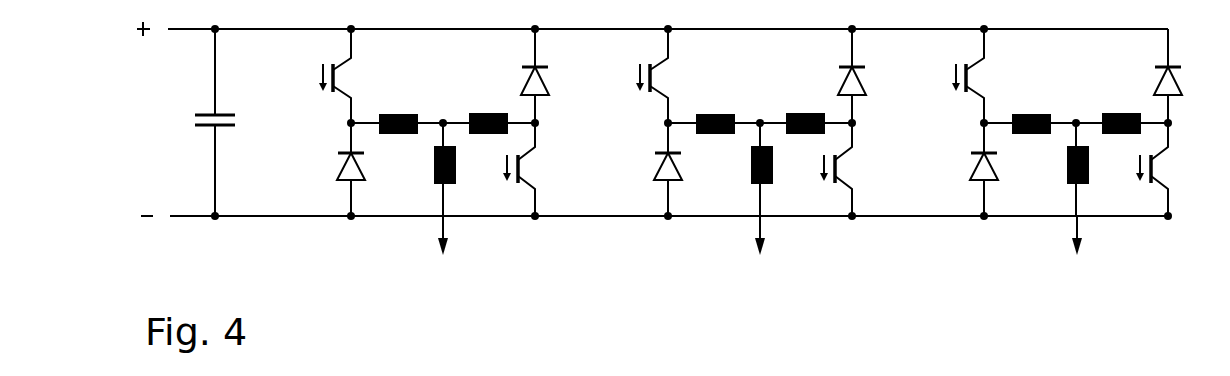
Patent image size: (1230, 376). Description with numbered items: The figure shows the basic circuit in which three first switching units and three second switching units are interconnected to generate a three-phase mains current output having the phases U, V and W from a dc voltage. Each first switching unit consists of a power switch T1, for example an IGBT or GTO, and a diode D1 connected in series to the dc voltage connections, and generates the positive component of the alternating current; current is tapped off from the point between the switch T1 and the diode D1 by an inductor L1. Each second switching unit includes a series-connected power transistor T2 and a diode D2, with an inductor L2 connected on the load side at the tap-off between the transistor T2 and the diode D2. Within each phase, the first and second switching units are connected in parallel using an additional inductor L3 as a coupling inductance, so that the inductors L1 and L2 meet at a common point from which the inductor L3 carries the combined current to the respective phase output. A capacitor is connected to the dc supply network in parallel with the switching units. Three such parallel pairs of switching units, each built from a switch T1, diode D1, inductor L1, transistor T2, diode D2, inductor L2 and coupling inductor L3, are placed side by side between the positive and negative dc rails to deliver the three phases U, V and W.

The power switch T1 is at (667, 76).
The power transistor T2 is at (854, 169).
The diode D1 is at (646, 169).
The diode D2 is at (871, 76).
The inductor L1 is at (715, 143).
The inductor L2 is at (805, 108).
The additional inductor L3 is at (777, 169).
The phase U is at (443, 257).
The phase V is at (761, 257).
The phase W is at (1077, 257).